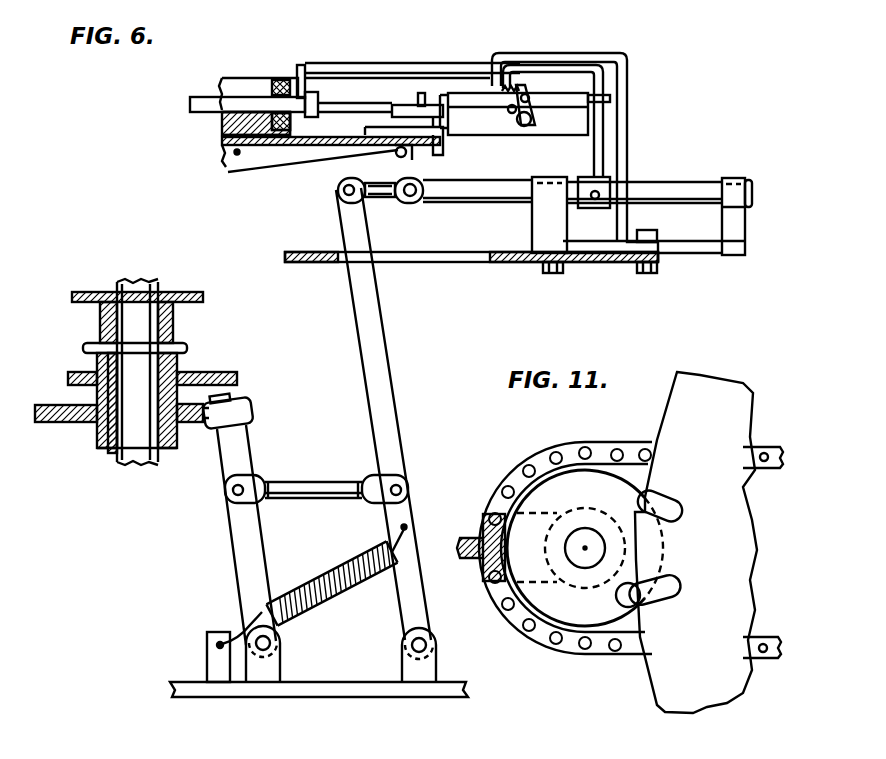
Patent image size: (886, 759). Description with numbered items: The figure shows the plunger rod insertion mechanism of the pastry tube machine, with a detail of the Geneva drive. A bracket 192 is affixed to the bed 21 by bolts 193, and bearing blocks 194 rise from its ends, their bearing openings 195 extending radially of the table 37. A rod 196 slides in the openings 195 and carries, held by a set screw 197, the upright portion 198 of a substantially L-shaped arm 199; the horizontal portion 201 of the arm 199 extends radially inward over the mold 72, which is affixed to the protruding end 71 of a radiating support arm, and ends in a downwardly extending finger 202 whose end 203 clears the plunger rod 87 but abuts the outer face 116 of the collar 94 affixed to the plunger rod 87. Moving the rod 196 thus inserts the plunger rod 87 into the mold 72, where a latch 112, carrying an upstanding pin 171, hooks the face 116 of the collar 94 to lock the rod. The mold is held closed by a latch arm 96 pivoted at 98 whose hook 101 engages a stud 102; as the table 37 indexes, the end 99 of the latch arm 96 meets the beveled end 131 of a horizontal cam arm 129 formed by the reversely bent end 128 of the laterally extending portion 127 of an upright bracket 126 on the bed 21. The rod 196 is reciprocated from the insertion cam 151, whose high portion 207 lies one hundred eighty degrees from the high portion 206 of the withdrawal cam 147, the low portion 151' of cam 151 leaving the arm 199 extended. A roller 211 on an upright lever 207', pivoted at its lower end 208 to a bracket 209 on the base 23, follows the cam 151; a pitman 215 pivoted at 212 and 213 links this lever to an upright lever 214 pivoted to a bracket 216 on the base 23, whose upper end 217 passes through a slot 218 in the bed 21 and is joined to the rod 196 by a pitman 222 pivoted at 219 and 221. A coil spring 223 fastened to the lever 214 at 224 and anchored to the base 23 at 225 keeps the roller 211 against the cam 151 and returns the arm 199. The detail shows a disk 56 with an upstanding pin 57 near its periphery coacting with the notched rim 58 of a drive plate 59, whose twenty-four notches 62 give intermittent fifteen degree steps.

In FIG. 6, the plunger rod 87 is at (238, 97).
In FIG. 6, the finger 202 is at (300, 88).
In FIG. 6, the end of finger 203 is at (312, 80).
In FIG. 6, the horizontal portion of arm 201 is at (385, 66).
In FIG. 6, the latch 112 is at (404, 106).
In FIG. 6, the upstanding pin 171 is at (424, 95).
In FIG. 6, the L-shaped arm 199 is at (473, 72).
In FIG. 6, the laterally extending portion 127 is at (522, 88).
In FIG. 6, the beveled end 131 is at (530, 94).
In FIG. 6, the hook 101 is at (538, 100).
In FIG. 6, the end of latch arm 99 is at (633, 47).
In FIG. 6, the upright bracket 126 is at (628, 72).
In FIG. 6, the upright portion of arm 198 is at (603, 122).
In FIG. 6, the rod 196 is at (670, 182).
In FIG. 6, the bearing openings 195 is at (750, 180).
In FIG. 6, the bearing blocks 194 is at (538, 222).
In FIG. 6, the set screw 197 is at (595, 200).
In FIG. 6, the bolts 193 is at (551, 273).
In FIG. 6, the bracket 192 is at (692, 258).
In FIG. 6, the slot 218 is at (410, 262).
In FIG. 6, the bed 21 is at (320, 262).
In FIG. 6, the upper end of lever 217 is at (346, 221).
In FIG. 6, the pivot 219 is at (338, 190).
In FIG. 6, the pitman 222 is at (385, 185).
In FIG. 6, the pivot 221 is at (408, 197).
In FIG. 6, the end of lateral portion 128 is at (514, 114).
In FIG. 6, the protruding end of support arm 71 is at (482, 133).
In FIG. 6, the latch arm 96 is at (511, 114).
In FIG. 6, the horizontal cam arm 129 is at (516, 86).
In FIG. 6, the pivot 98 is at (526, 127).
In FIG. 6, the mold 72 is at (568, 106).
In FIG. 6, the stud 102 is at (530, 99).
In FIG. 6, the table 37 is at (236, 154).
In FIG. 6, the outer face of collar 116 is at (292, 140).
In FIG. 6, the collar 94 is at (316, 104).
In FIG. 6, the plunger rod withdrawal cam 147 is at (208, 372).
In FIG. 11, the plunger rod withdrawal cam 147 is at (543, 458).
In FIG. 6, the high portion of cam 206 is at (237, 376).
In FIG. 6, the roller 211 is at (253, 410).
In FIG. 6, the high portion of cam 207 is at (57, 439).
In FIG. 6, the plunger rod insertion cam 151 is at (87, 413).
In FIG. 6, the low portion of cam 151' is at (198, 438).
In FIG. 6, the upright lever 214 is at (388, 404).
In FIG. 6, the pitman 215 is at (318, 482).
In FIG. 6, the pivot 212 is at (232, 490).
In FIG. 6, the pivot 213 is at (405, 482).
In FIG. 6, the spring attachment point 224 is at (404, 529).
In FIG. 6, the coil spring 223 is at (332, 592).
In FIG. 6, the upright lever 207' is at (228, 535).
In FIG. 6, the lower end of lever 208 is at (248, 620).
In FIG. 6, the spring anchor 225 is at (207, 645).
In FIG. 6, the bracket 209 is at (278, 664).
In FIG. 6, the bracket 216 is at (436, 662).
In FIG. 6, the base 23 is at (334, 697).
In FIG. 11, the notches 62 is at (655, 452).
In FIG. 11, the disk 56 is at (558, 605).
In FIG. 11, the upstanding pin 57 is at (565, 561).
In FIG. 11, the notched rim 58 is at (655, 675).
In FIG. 11, the drive plate 59 is at (693, 686).